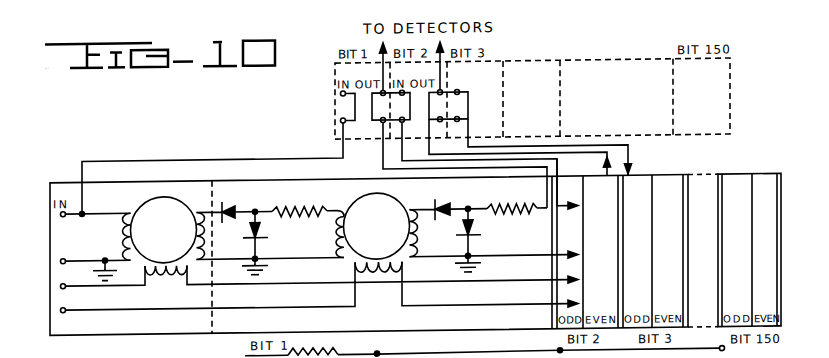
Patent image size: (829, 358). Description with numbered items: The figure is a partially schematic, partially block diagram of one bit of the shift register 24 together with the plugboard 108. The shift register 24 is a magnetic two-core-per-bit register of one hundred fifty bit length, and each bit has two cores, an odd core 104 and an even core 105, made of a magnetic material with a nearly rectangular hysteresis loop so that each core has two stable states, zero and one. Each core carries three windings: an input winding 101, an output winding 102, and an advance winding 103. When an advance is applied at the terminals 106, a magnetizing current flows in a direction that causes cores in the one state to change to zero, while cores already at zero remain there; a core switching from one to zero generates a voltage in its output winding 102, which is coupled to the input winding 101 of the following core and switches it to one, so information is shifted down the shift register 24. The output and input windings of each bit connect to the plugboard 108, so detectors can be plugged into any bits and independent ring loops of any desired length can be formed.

The shift register 24 is at (38, 250).
The input winding 101 is at (121, 226).
The output winding 102 is at (196, 229).
The advance winding 103 is at (165, 281).
The odd core 104 is at (166, 336).
The even core 105 is at (383, 337).
The terminals 106 is at (60, 311).
The plugboard 108 is at (640, 111).